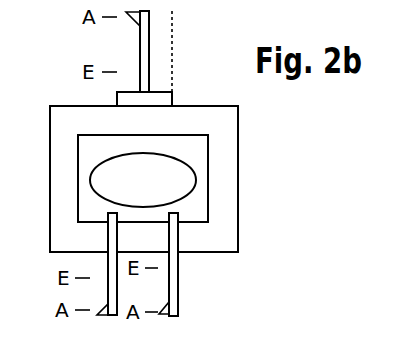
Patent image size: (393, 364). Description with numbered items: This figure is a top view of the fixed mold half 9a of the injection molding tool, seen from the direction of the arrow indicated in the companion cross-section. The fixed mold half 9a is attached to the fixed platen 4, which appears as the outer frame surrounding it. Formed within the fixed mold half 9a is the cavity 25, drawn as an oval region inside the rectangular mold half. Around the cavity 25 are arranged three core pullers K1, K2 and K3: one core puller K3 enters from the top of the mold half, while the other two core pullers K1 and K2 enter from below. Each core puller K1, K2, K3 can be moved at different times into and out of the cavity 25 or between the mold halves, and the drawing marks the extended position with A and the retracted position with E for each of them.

The fixed platen 4 is at (222, 127).
The fixed mold half 9a is at (200, 212).
The cavity 25 is at (188, 177).
The core puller K1 is at (108, 242).
The core puller K2 is at (178, 275).
The core puller K3 is at (149, 23).